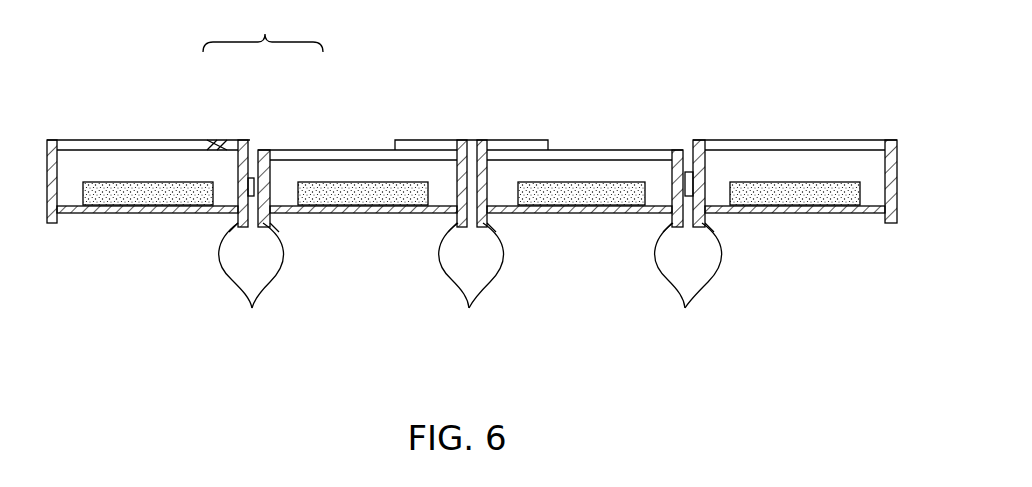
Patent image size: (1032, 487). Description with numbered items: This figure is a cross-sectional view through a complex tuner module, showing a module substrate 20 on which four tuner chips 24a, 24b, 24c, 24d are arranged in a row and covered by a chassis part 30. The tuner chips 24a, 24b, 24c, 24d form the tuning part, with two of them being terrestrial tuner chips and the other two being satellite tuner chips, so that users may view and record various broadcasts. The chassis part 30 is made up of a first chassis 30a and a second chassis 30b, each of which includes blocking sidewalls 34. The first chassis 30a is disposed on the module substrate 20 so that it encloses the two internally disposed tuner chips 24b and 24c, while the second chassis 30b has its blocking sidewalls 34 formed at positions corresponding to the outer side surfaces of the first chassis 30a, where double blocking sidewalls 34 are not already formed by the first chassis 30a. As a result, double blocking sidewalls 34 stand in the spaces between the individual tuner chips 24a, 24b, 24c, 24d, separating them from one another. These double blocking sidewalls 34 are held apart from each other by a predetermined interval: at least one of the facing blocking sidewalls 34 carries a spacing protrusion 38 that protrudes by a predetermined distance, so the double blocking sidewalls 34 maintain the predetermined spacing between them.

The module substrate 20 is at (588, 224).
The tuner chip 24a is at (143, 218).
The tuner chip 24b is at (363, 218).
The tuner chip 24c is at (550, 218).
The tuner chip 24d is at (808, 213).
The chassis part 30 is at (263, 29).
The first chassis 30a is at (580, 152).
The second chassis 30b is at (231, 144).
The blocking sidewalls 34 is at (470, 279).
The spacing protrusion 38 is at (249, 220).